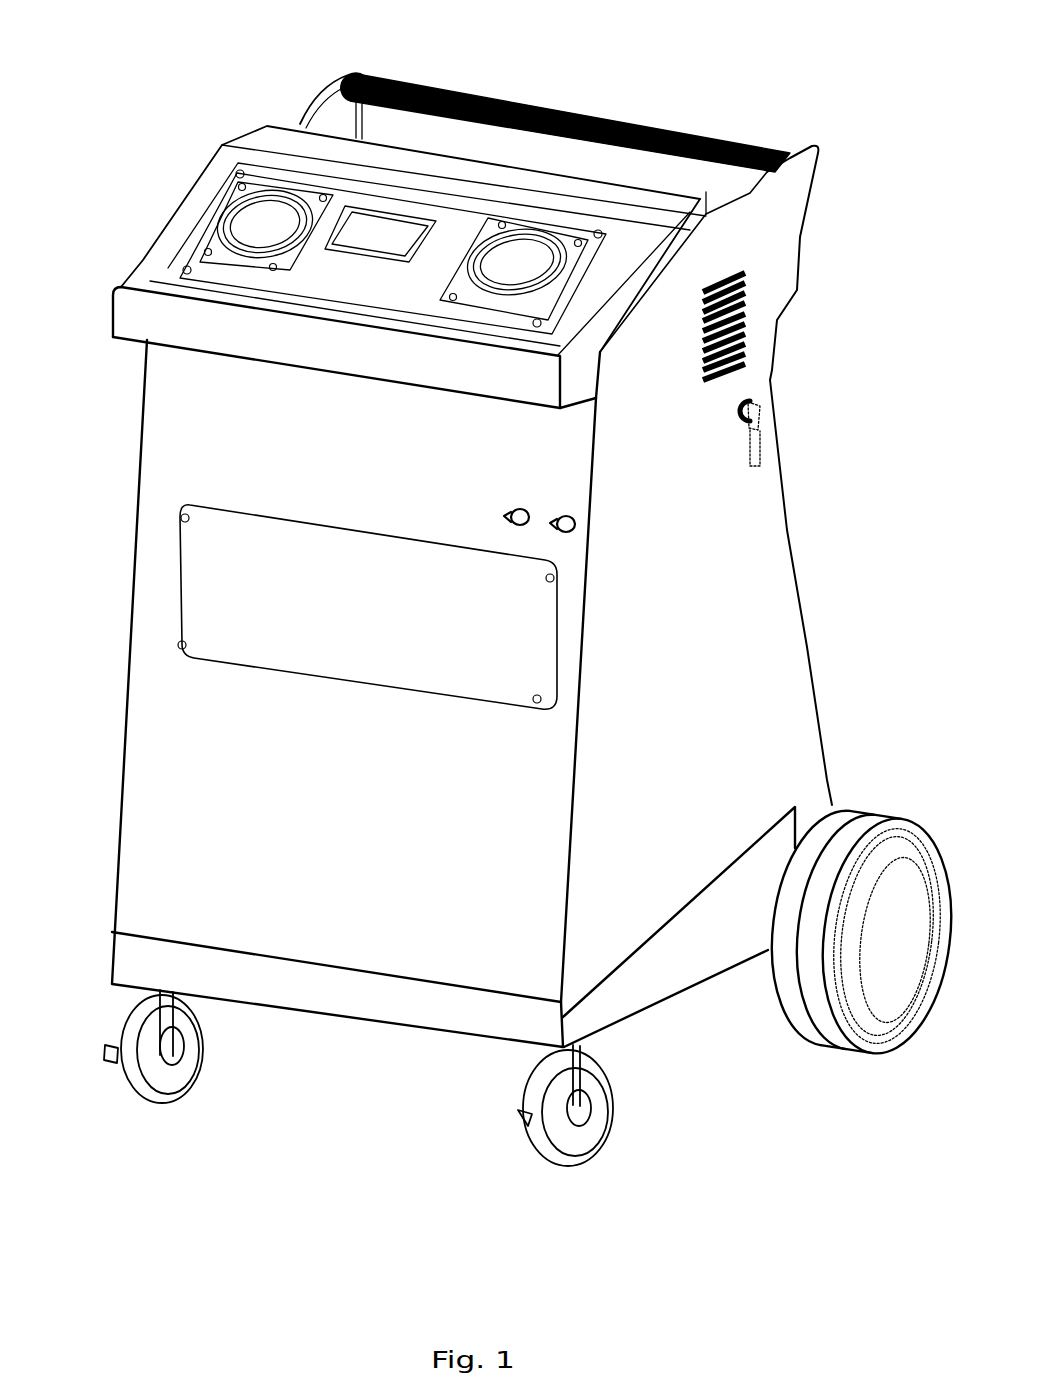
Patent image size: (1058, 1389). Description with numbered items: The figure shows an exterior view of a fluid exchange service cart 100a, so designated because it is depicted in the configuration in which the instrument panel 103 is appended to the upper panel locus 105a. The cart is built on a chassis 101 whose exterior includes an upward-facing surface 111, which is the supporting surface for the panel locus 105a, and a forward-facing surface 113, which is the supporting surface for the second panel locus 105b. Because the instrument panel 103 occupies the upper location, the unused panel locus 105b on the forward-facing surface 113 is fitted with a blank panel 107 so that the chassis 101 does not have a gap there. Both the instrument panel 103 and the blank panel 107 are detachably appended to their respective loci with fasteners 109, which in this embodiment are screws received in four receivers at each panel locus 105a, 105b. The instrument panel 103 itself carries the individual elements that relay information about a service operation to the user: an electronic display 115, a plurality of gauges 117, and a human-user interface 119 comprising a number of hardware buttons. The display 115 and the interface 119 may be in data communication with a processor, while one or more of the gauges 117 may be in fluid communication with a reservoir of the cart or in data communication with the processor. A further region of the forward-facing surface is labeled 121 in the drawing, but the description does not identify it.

The service cart 100a is at (850, 108).
The chassis 101 is at (777, 570).
The instrument panel 103 is at (444, 200).
The panel locus 105a is at (588, 290).
The panel locus 105b is at (566, 730).
The blank panel 107 is at (358, 611).
The fasteners 109 is at (237, 171).
The upward-facing surface 111 is at (142, 270).
The forward-facing surface 113 is at (562, 906).
The electronic display 115 is at (333, 250).
The gauges 117 is at (247, 243).
The human-user interface (HMI) 119 is at (377, 283).
The front panel area 121 is at (264, 444).